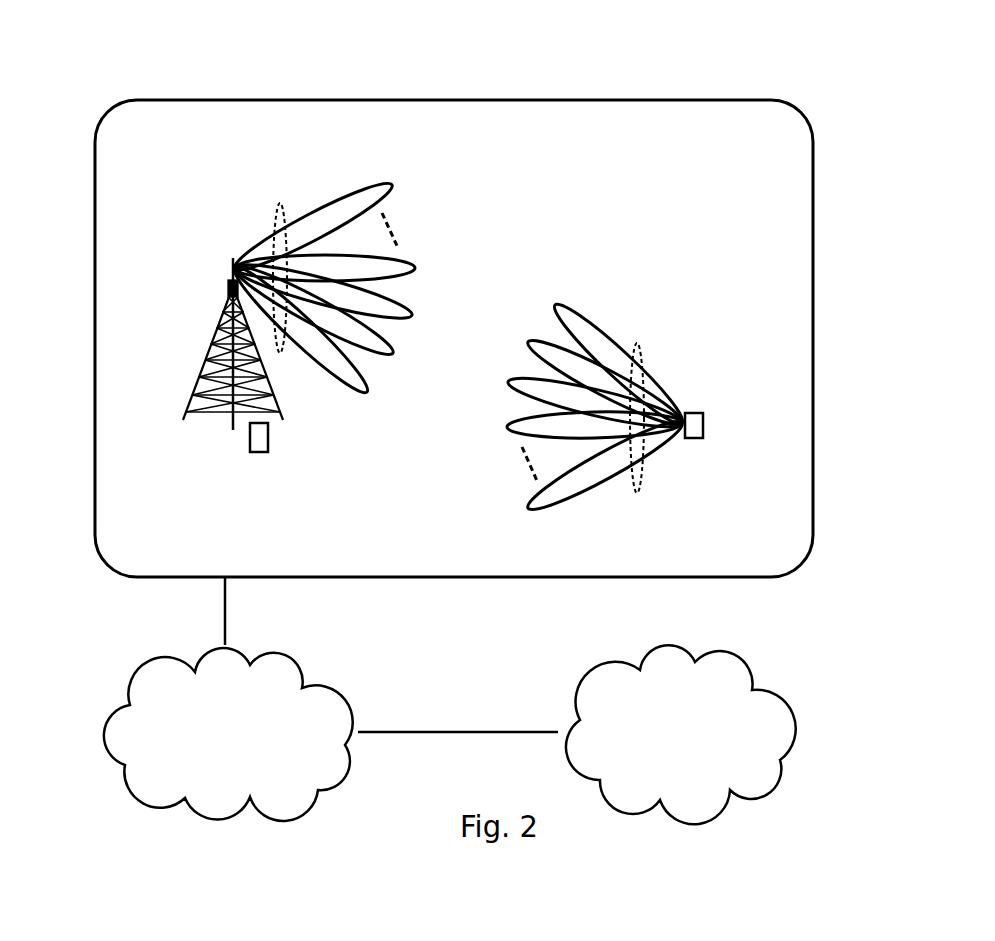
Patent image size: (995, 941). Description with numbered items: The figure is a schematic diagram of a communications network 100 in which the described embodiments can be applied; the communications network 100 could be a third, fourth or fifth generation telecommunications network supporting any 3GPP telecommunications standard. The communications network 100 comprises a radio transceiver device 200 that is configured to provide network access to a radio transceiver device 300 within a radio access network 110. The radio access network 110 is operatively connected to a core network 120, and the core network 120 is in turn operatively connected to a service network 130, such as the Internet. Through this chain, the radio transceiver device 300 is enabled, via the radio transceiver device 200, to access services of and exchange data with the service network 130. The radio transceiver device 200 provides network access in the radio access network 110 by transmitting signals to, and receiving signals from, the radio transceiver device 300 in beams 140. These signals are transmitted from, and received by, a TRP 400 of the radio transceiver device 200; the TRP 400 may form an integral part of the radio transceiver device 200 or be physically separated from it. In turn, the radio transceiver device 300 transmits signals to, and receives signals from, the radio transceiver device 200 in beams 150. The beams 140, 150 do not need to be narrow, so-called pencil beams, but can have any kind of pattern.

The communications network 100 is at (178, 72).
The radio access network 110 is at (172, 145).
The core network 120 is at (265, 755).
The service network 130 is at (707, 753).
The beams 140 is at (278, 203).
The beams 150 is at (637, 343).
The radio transceiver device 200 is at (249, 447).
The radio transceiver device 300 is at (704, 420).
The TRP 400 is at (231, 278).